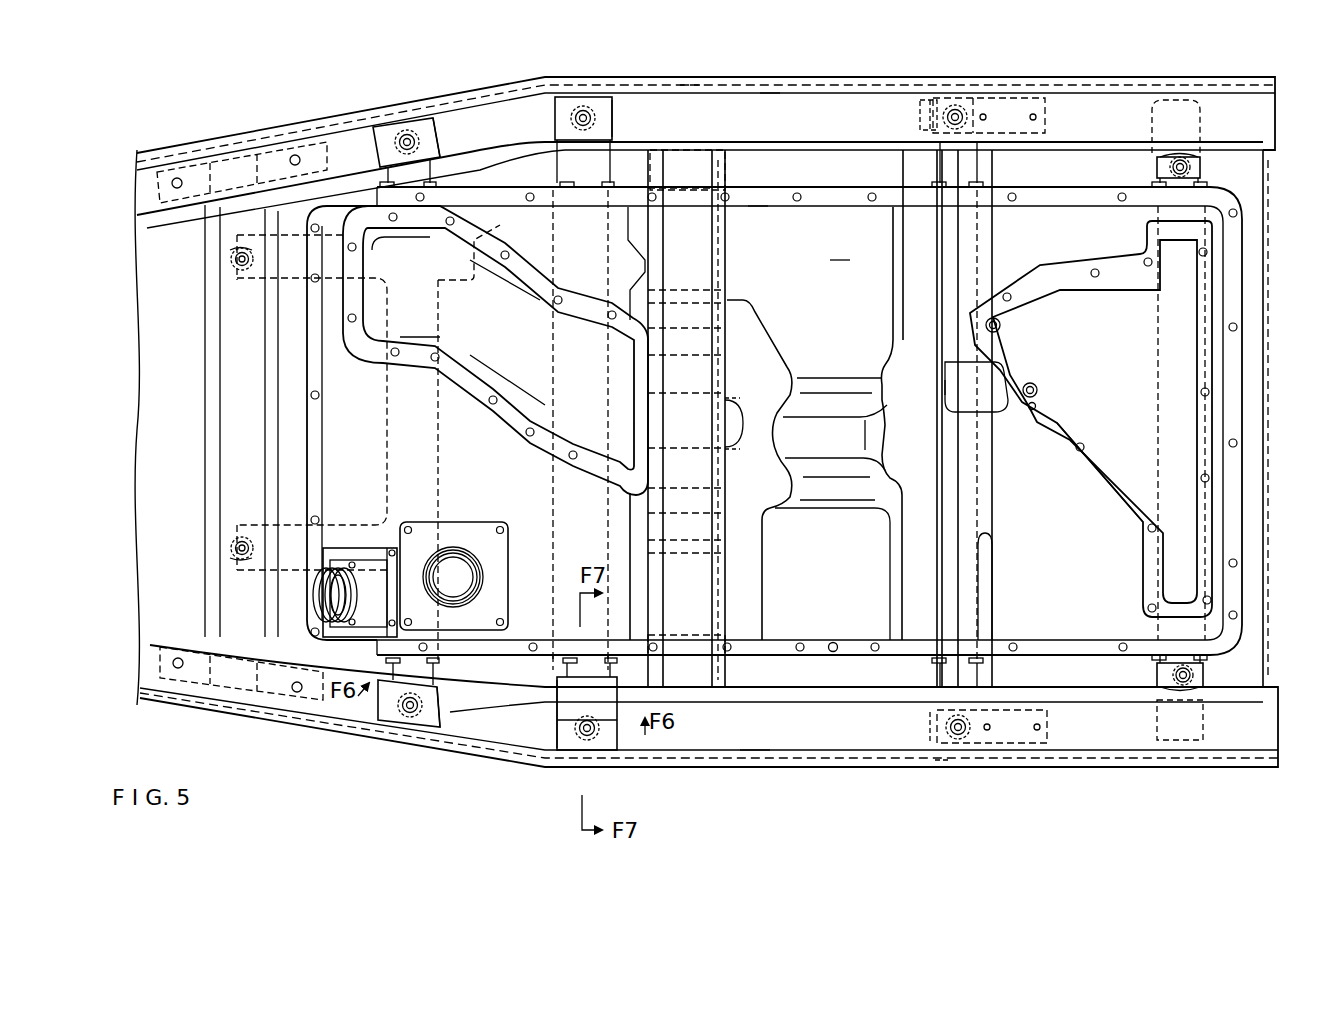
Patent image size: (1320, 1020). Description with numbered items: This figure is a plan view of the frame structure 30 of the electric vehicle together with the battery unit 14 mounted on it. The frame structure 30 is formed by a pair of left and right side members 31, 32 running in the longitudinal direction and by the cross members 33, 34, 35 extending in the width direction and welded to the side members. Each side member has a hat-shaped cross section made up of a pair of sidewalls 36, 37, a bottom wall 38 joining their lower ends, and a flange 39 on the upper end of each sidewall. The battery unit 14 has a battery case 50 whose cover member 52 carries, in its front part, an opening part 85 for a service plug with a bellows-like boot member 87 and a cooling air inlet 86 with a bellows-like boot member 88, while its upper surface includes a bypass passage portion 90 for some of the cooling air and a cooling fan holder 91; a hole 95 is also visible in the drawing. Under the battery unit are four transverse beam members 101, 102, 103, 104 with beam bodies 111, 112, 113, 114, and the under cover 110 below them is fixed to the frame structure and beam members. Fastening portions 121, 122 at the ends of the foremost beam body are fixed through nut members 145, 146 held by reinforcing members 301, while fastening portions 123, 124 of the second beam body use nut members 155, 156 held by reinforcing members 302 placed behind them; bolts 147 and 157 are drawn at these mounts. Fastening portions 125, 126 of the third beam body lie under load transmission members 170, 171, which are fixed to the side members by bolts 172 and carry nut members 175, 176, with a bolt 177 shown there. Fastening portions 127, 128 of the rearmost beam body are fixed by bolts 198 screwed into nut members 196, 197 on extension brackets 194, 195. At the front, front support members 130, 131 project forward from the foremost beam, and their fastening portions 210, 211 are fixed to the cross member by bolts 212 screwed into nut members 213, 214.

The battery unit 14 is at (813, 183).
The frame structure 30 is at (719, 75).
The side member 31 is at (1080, 755).
The side member 32 is at (1082, 92).
The cross member 33 is at (235, 398).
The cross member 34 is at (740, 367).
The cross member 35 is at (957, 440).
The sidewall 36 is at (695, 88).
The sidewall 37 is at (742, 140).
The bottom wall 38 is at (770, 112).
The flange 39 is at (835, 77).
The battery case 50 is at (840, 252).
The cover member 52 is at (755, 215).
The opening part 85 is at (458, 562).
The cooling air inlet 86 is at (316, 592).
The boot member 87 is at (493, 572).
The boot member 88 is at (345, 562).
The bypass passage portion 90 is at (495, 292).
The cooling fan holder 91 is at (1068, 290).
The bolt hole 95 is at (833, 652).
The beam member 101 is at (440, 445).
The beam member 102 is at (650, 428).
The beam member 103 is at (978, 480).
The beam member 104 is at (1170, 408).
The under cover 110 is at (755, 755).
The beam body 111 is at (380, 382).
The beam body 112 is at (500, 560).
The beam body 113 is at (975, 520).
The beam body 114 is at (1135, 470).
The fastening portion 121 is at (343, 728).
The fastening portion 122 is at (363, 142).
The fastening portion 123 is at (577, 755).
The fastening portion 124 is at (560, 98).
The fastening portion 125 is at (940, 770).
The fastening portion 126 is at (920, 100).
The fastening portion 127 is at (1157, 678).
The fastening portion 128 is at (1157, 170).
The front support member 130 is at (295, 530).
The front support member 131 is at (290, 282).
The nut member 145 is at (441, 715).
The nut member 146 is at (437, 130).
The mounting bolt 147 is at (403, 122).
The nut member 155 is at (600, 735).
The nut member 156 is at (625, 110).
The mounting bolt 157 is at (590, 112).
The load transmission member 170 is at (1000, 760).
The load transmission member 171 is at (1008, 98).
The bolt 172 is at (1033, 122).
The nut member 175 is at (937, 727).
The nut member 176 is at (920, 118).
The mounting bolt 177 is at (955, 103).
The extension bracket 194 is at (1203, 674).
The extension bracket 195 is at (1200, 170).
The nut member 196 is at (1203, 705).
The nut member 197 is at (1202, 150).
The bolt 198 is at (1172, 163).
The fastening portion 210 is at (237, 527).
The fastening portion 211 is at (240, 282).
The bolt 212 is at (238, 262).
The nut member 213 is at (238, 560).
The nut member 214 is at (237, 257).
The reinforcing member 301 is at (448, 145).
The reinforcing member 302 is at (614, 118).